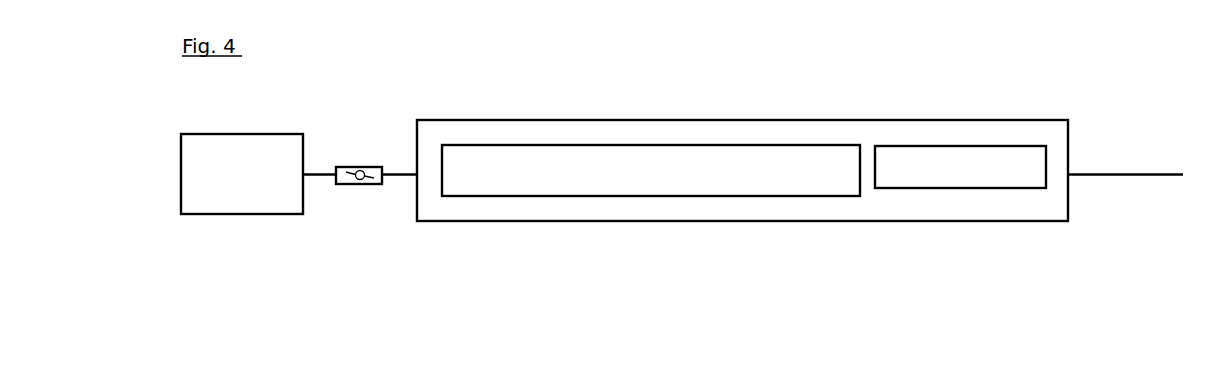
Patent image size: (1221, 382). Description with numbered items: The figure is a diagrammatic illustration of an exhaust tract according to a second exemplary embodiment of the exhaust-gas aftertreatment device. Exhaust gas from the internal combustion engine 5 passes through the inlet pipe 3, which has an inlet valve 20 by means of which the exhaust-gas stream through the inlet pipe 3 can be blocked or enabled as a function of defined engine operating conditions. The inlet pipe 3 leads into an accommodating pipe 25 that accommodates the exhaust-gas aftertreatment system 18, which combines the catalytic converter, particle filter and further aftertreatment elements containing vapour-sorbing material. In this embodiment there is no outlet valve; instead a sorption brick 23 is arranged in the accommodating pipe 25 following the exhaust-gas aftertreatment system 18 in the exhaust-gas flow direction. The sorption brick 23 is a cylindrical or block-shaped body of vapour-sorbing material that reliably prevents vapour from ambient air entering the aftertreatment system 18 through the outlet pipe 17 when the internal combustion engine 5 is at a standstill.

The inlet pipe 3 is at (397, 174).
The internal combustion engine 5 is at (234, 186).
The outlet pipe 17 is at (1112, 178).
The exhaust-gas aftertreatment system 18 is at (703, 145).
The inlet valve 20 is at (351, 187).
The sorption brick 23 is at (942, 146).
The accommodating pipe 25 is at (526, 120).